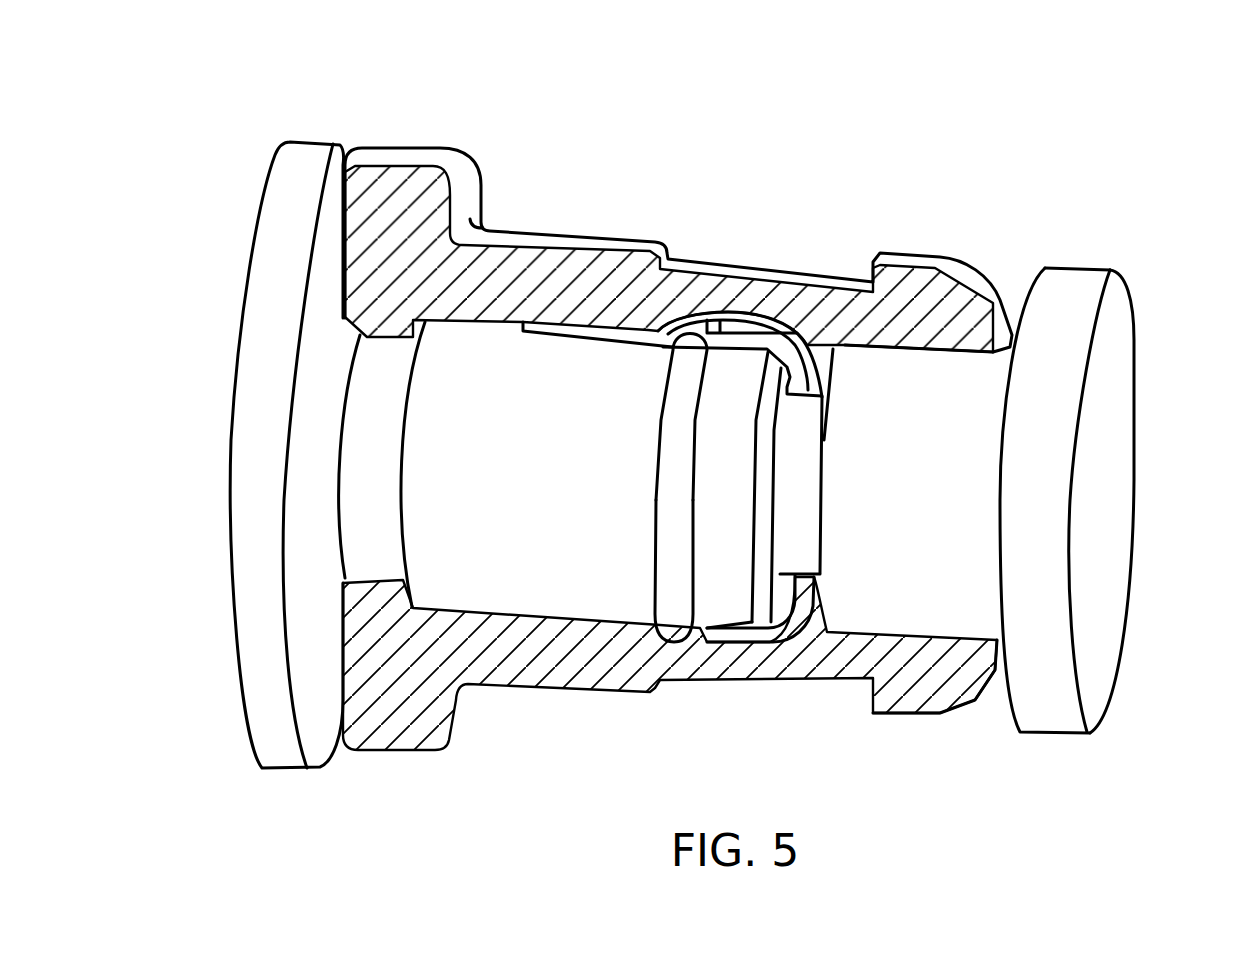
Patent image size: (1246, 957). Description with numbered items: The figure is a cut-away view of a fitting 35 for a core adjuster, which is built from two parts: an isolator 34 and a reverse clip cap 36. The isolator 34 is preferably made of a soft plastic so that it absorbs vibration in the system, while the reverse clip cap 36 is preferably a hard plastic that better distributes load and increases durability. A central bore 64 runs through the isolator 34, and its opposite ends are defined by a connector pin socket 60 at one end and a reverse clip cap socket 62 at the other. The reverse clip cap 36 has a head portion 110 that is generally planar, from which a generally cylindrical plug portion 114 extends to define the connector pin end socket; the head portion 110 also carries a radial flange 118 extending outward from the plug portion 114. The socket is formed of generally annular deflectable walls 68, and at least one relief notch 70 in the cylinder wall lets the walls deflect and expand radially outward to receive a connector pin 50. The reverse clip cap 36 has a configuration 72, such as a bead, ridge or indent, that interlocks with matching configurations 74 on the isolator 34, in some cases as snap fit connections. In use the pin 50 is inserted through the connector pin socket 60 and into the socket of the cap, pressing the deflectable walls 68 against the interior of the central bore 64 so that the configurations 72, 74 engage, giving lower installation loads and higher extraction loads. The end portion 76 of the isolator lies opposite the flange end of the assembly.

The cap assembly 35 is at (490, 58).
The reverse clip cap socket 62 is at (358, 155).
The isolator 34 is at (600, 650).
The reverse clip cap 36 is at (538, 582).
The relief notch 70 is at (689, 326).
The configuration 72 is at (681, 634).
The deflectable walls 68 is at (747, 335).
The central bore 64 is at (812, 377).
The configurations 74 is at (737, 645).
The end portion of cap body 76 is at (862, 732).
The connector pin socket 60 is at (1023, 258).
The connector pin 50 is at (1170, 461).
The head portion 110 is at (241, 409).
The plug portion 114 is at (355, 458).
The radial flange 118 is at (262, 752).